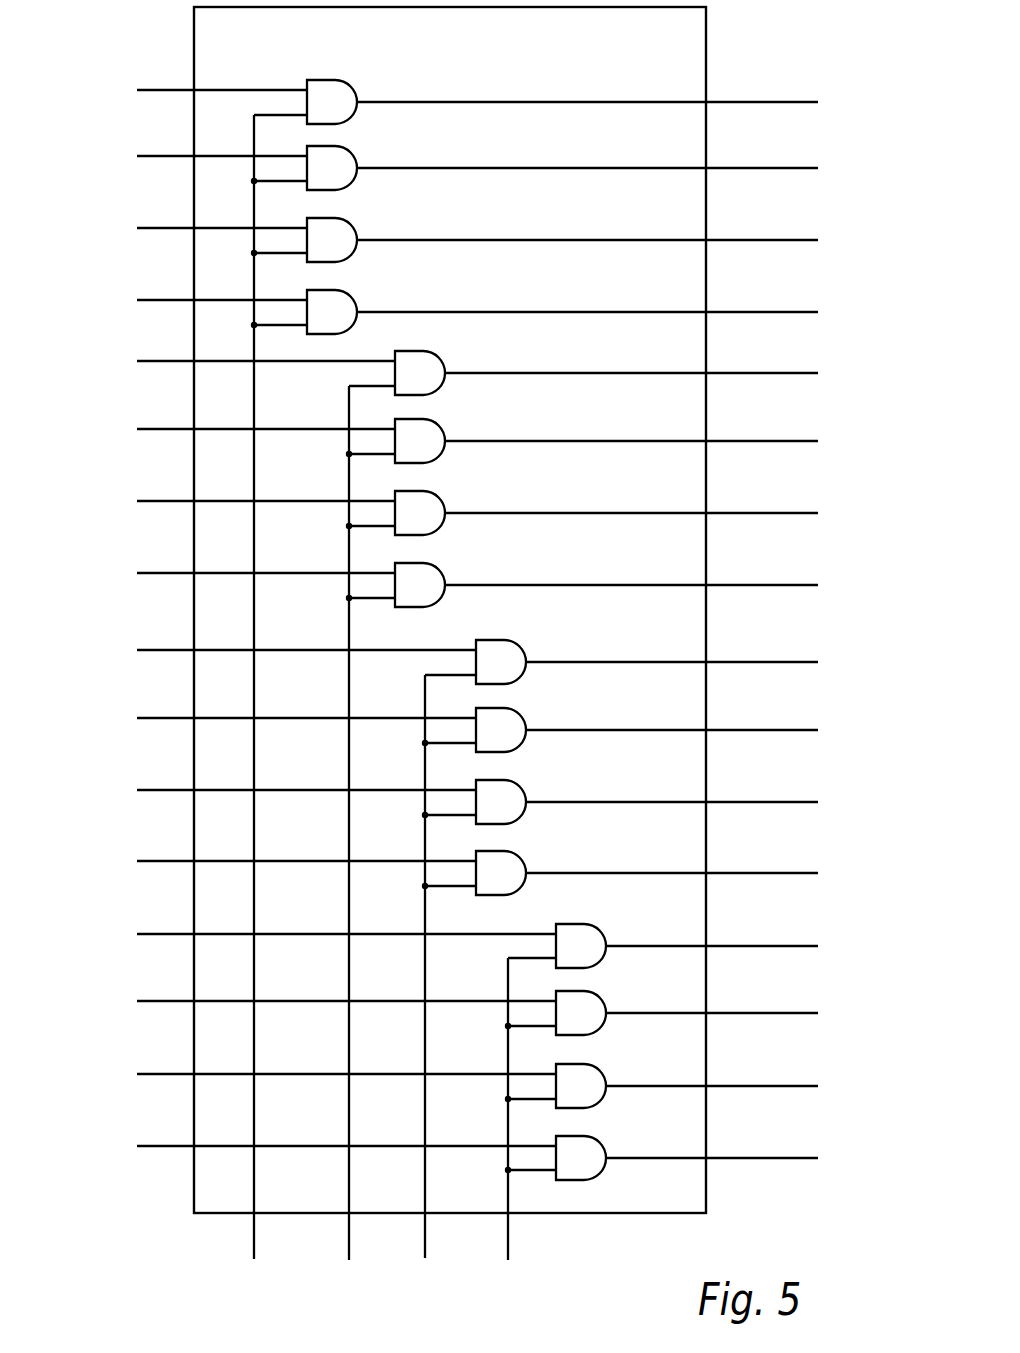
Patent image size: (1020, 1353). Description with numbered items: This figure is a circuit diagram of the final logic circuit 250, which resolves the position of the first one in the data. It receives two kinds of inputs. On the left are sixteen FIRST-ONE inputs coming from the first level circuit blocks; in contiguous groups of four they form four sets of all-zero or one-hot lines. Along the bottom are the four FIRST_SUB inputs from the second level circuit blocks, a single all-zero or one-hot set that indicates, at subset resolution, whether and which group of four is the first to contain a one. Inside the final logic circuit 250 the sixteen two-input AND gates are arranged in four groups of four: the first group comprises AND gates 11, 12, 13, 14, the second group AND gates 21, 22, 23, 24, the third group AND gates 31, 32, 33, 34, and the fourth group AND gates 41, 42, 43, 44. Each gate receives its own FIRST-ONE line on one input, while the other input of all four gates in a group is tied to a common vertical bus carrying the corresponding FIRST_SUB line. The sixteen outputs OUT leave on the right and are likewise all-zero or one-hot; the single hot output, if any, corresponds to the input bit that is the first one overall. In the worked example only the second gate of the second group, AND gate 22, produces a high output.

The final logic circuit 250 is at (617, 46).
The AND gate for FIRST1_11 and OUT_ 11 is at (461, 102).
The AND gate for FIRST1_12 and OUT_ 12 is at (461, 168).
The AND gate for FIRST1_13 and OUT_ 13 is at (461, 240).
The AND gate for FIRST1_14 and OUT_ 14 is at (461, 312).
The AND gate for FIRST1_21 and OUT_ 21 is at (461, 373).
The AND gate for FIRST1_22 and OUT_ 22 is at (461, 441).
The AND gate for FIRST1_23 and OUT_ 23 is at (461, 513).
The AND gate for FIRST1_24 and OUT_ 24 is at (461, 585).
The AND gate for FIRST1_31 and OUT_ 31 is at (461, 662).
The AND gate for FIRST1_32 and OUT_ 32 is at (461, 730).
The AND gate for FIRST1_33 and OUT_ 33 is at (461, 802).
The AND gate for FIRST1_34 and OUT_ 34 is at (461, 873).
The AND gate for FIRST1_41 and OUT_ 41 is at (461, 946).
The AND gate for FIRST1_42 and OUT_ 42 is at (461, 1013).
The AND gate for FIRST1_43 and OUT_ 43 is at (461, 1086).
The AND gate for FIRST1_44 and OUT_ 44 is at (461, 1158).